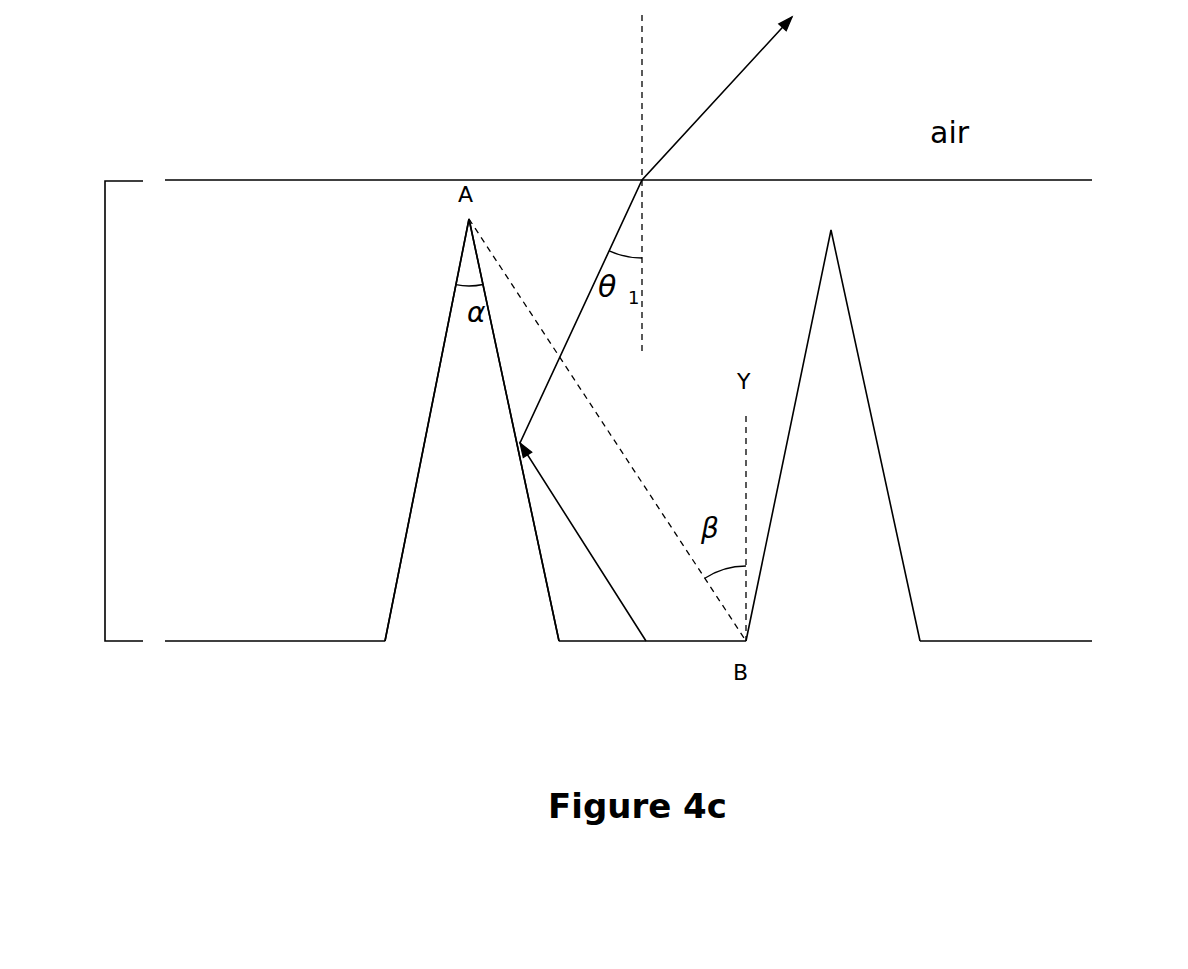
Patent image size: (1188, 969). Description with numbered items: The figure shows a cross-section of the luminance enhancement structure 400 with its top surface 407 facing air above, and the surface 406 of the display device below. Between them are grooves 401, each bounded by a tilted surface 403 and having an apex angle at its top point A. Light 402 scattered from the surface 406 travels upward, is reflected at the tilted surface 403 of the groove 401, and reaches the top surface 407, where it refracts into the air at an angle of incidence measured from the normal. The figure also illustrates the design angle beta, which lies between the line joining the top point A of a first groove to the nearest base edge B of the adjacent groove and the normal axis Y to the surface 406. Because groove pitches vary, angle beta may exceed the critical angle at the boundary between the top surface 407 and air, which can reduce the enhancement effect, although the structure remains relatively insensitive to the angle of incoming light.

The luminance enhancement structure 400 is at (105, 403).
The groove 401 is at (652, 430).
The light 402 is at (578, 510).
The tilted surface 403 is at (486, 360).
The surface 406 is at (665, 641).
The top surface 407 is at (669, 183).